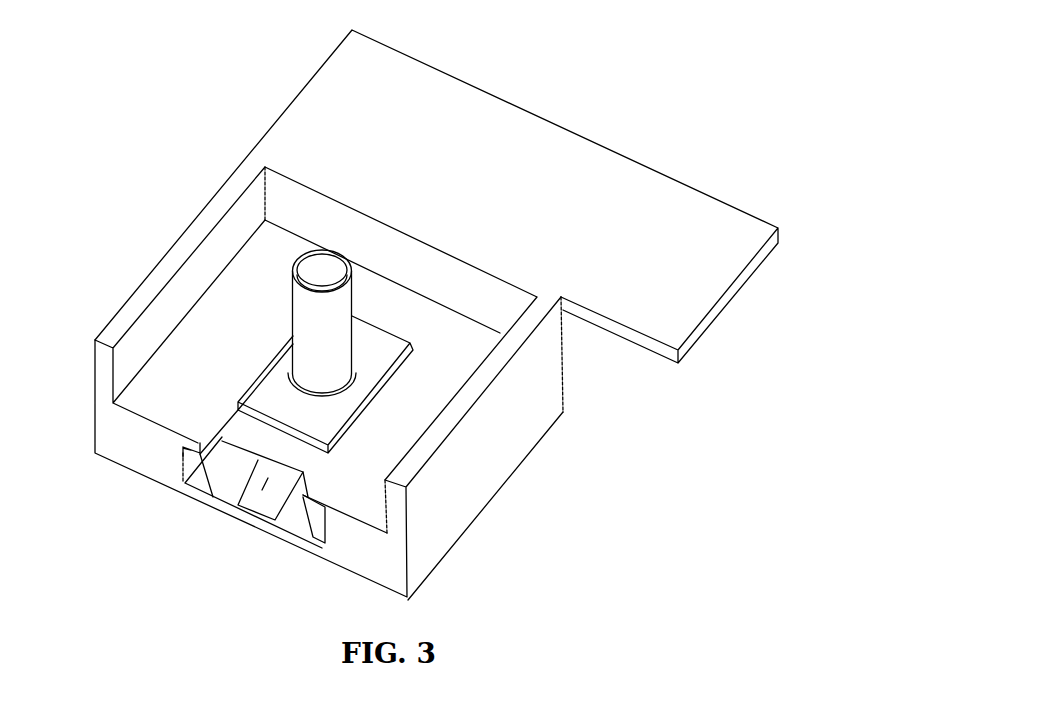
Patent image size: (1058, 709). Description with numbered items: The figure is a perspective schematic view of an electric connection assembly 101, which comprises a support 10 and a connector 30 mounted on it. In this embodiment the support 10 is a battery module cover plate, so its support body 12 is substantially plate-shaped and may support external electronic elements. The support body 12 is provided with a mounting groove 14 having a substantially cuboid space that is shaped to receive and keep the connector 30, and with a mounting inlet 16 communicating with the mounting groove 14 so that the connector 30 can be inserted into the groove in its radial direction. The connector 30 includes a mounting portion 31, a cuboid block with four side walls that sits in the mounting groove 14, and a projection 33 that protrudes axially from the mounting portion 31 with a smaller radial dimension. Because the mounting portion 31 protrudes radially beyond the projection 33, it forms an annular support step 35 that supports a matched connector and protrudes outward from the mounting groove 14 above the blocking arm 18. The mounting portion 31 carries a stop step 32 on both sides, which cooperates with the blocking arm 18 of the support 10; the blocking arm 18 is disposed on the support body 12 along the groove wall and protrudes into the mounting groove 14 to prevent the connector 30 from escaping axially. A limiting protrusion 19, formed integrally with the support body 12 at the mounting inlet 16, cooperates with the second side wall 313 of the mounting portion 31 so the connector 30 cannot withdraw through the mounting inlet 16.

The electric connection assembly 101 is at (478, 60).
The connector 30 is at (172, 160).
The mounting portion 31 is at (232, 428).
The stop step 32 is at (235, 432).
The projection 33 is at (312, 275).
The support step 35 is at (293, 363).
The second side wall 313 is at (286, 450).
The support 10 is at (250, 590).
The support body 12 is at (257, 459).
The mounting groove 14 is at (218, 495).
The mounting inlet 16 is at (233, 472).
The blocking arm 18 is at (183, 455).
The limiting protrusion 19 is at (262, 490).